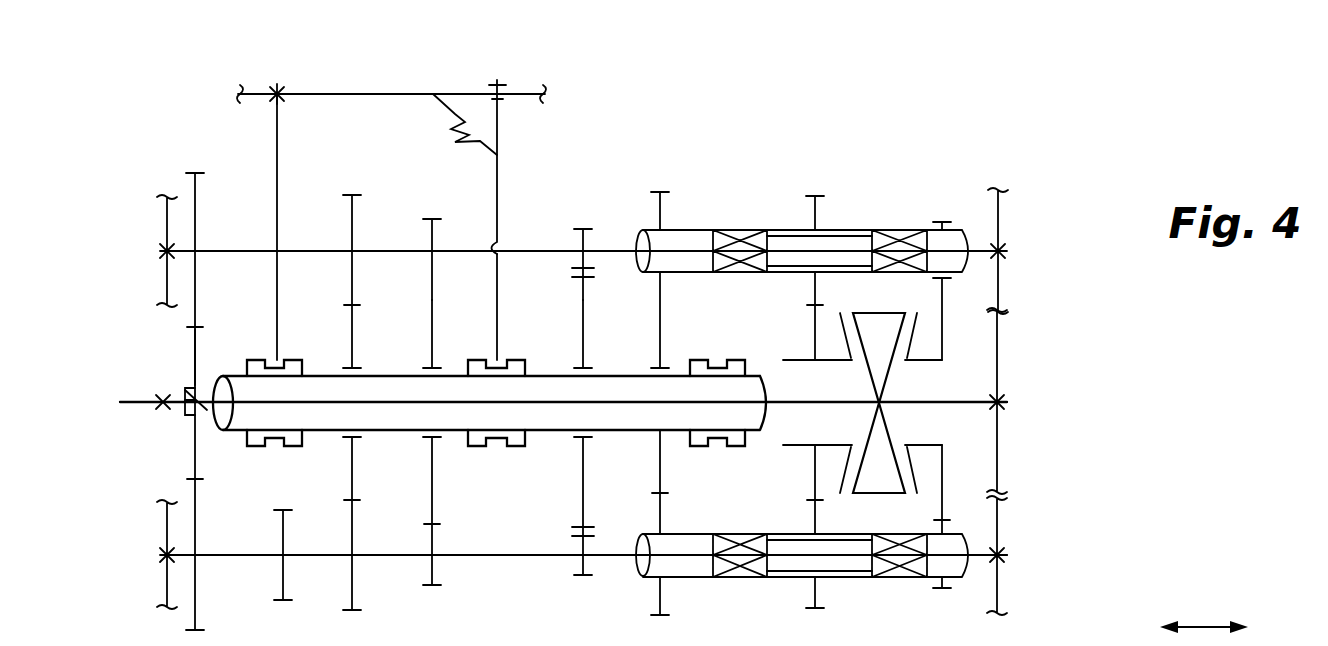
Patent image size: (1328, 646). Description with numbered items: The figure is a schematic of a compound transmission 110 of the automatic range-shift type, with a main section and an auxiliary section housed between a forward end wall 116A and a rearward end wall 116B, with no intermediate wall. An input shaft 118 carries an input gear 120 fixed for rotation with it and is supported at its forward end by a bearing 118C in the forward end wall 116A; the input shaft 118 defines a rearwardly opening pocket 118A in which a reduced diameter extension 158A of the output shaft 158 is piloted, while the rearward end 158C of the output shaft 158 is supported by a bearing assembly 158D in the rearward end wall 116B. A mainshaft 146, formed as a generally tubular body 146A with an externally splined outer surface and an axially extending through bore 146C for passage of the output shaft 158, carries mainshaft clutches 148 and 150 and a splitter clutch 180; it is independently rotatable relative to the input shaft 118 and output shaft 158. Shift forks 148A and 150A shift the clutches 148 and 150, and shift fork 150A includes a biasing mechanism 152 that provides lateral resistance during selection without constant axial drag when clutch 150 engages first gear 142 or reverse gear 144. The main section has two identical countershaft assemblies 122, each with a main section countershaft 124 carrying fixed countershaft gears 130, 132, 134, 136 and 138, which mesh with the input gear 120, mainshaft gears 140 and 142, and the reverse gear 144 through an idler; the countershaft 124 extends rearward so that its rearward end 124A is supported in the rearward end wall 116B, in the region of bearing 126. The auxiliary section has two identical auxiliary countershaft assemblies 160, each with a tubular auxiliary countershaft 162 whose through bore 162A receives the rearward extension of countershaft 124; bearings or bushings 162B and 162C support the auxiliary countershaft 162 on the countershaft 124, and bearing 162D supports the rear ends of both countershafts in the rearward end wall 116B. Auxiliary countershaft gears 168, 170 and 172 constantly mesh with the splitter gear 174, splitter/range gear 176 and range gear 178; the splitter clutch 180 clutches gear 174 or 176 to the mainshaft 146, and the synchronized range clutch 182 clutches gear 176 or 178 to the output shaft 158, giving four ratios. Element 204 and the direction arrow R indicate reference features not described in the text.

The transmission 110 is at (781, 162).
The forward end wall 116A is at (165, 250).
The rearward end wall 116B is at (1000, 218).
The input shaft 118 is at (160, 408).
The rearwardly opening pocket 118A is at (198, 415).
The bearing 118C is at (172, 410).
The input gear 120 is at (197, 353).
The main section countershaft assembly 122 is at (465, 222).
The main section countershaft 124 is at (378, 557).
The rearward end 124A is at (982, 558).
The bearing 126 is at (162, 559).
The countershaft gear 130 is at (197, 215).
The countershaft gear 132 is at (284, 545).
The countershaft gear 134 is at (350, 230).
The countershaft gear 136 is at (430, 232).
The countershaft gear 138 is at (582, 243).
The mainshaft gear 140 is at (356, 310).
The first gear 142 is at (437, 335).
The reverse mainshaft gear 144 is at (585, 345).
The mainshaft 146 is at (388, 376).
The tubular body 146A is at (326, 431).
The through bore 146C is at (187, 388).
The mainshaft clutch 148 is at (276, 360).
The shift fork 148A is at (277, 163).
The mainshaft clutch 150 is at (500, 335).
The shift fork 150A is at (498, 175).
The biasing mechanism 152 is at (492, 128).
The output shaft 158 is at (995, 400).
The reduced diameter extension 158A is at (217, 385).
The rearward end 158C is at (1004, 405).
The bearing assembly 158D is at (1005, 401).
The auxiliary countershaft assembly 160 is at (880, 188).
The auxiliary countershaft 162 is at (1002, 553).
The through bore 162A is at (786, 538).
The bearing or bushing 162B is at (736, 247).
The bearing or bushing 162C is at (895, 230).
The bearing 162D is at (778, 234).
The auxiliary countershaft gear 168 is at (662, 213).
The auxiliary countershaft gear 170 is at (817, 205).
The auxiliary countershaft gear 172 is at (948, 225).
The splitter gear 174 is at (661, 332).
The splitter/range gear 176 is at (815, 327).
The range gear 178 is at (940, 288).
The splitter clutch 180 is at (716, 360).
The synchronized range clutch 182 is at (890, 429).
The ground 204 is at (360, 97).
The radial direction R is at (1210, 627).